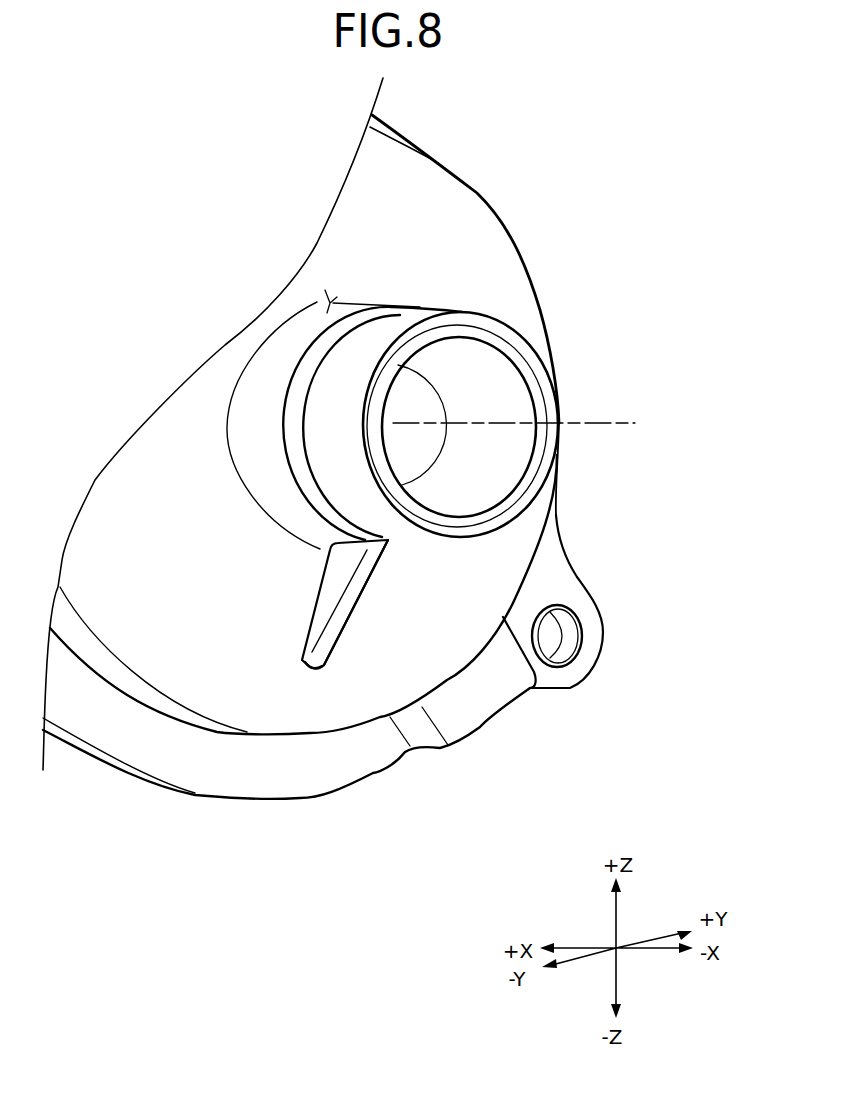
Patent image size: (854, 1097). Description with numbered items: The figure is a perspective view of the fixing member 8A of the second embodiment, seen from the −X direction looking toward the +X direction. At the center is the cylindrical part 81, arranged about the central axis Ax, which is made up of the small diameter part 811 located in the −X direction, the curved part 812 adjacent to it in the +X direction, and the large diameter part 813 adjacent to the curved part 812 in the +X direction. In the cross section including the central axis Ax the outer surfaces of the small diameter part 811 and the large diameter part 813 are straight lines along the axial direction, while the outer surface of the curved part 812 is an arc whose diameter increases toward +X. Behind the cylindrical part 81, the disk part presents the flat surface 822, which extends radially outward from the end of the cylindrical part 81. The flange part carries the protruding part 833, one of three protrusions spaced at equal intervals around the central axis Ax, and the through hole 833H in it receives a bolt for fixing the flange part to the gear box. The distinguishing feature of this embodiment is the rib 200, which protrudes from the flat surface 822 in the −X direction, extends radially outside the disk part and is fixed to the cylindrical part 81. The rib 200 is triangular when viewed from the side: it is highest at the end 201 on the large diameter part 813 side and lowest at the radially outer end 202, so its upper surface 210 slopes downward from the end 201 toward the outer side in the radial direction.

The fixing member 8A is at (602, 262).
The cylindrical part 81 is at (430, 323).
The small diameter part 811 is at (408, 320).
The curved part 812 is at (372, 308).
The large diameter part 813 is at (333, 300).
The flat surface 822 is at (453, 572).
The protruding part 833 is at (590, 690).
The through hole 833H is at (548, 637).
The rib 200 is at (359, 694).
The end 201 is at (338, 557).
The end 202 is at (315, 660).
The upper surface 210 is at (368, 570).
The central axis Ax is at (619, 421).